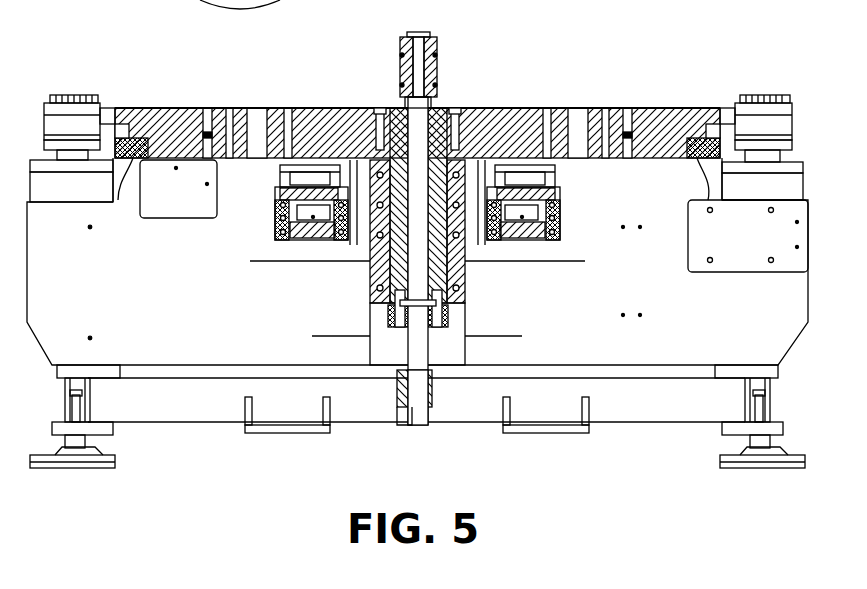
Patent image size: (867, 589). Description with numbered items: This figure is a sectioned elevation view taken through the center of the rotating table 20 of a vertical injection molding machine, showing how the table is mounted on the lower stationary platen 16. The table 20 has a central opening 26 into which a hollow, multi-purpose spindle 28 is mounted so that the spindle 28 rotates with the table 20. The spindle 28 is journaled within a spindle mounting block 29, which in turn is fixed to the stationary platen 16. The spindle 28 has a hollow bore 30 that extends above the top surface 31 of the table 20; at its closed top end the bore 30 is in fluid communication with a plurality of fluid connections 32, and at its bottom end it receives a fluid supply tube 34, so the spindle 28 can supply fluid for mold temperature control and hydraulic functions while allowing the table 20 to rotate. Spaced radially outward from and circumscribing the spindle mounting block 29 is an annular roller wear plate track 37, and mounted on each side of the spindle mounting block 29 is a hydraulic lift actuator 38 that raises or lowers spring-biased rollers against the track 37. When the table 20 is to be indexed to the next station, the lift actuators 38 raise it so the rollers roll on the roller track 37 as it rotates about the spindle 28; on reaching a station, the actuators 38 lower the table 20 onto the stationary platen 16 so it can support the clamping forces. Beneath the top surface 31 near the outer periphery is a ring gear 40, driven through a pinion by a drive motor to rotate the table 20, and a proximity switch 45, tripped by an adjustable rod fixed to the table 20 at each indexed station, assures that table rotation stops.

The stationary platen 16 is at (808, 290).
The table 20 is at (697, 75).
The central opening 26 is at (378, 133).
The spindle 28 is at (458, 158).
The spindle mounting block 29 is at (465, 248).
The hollow bore 30 is at (412, 285).
The top surface 31 is at (643, 108).
The fluid connections 32 is at (435, 53).
The fluid supply tube 34 is at (412, 423).
The roller track 37 is at (325, 153).
The hydraulic lift actuator 38 is at (562, 232).
The ring gear 40 is at (722, 160).
The proximity switch 45 is at (110, 148).